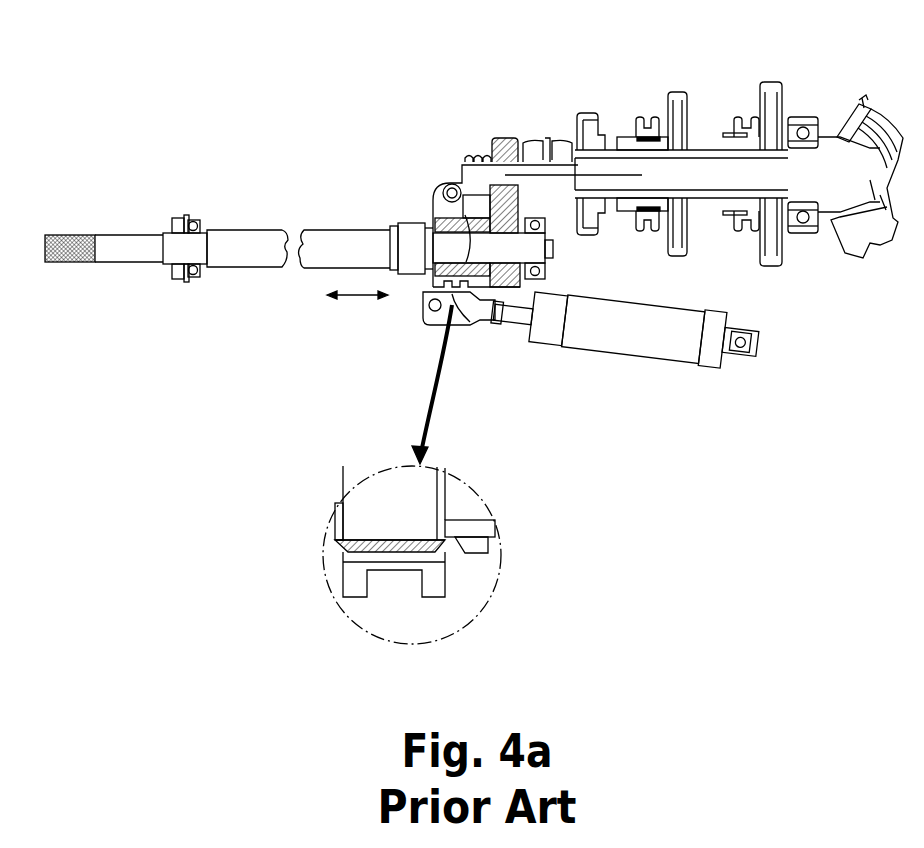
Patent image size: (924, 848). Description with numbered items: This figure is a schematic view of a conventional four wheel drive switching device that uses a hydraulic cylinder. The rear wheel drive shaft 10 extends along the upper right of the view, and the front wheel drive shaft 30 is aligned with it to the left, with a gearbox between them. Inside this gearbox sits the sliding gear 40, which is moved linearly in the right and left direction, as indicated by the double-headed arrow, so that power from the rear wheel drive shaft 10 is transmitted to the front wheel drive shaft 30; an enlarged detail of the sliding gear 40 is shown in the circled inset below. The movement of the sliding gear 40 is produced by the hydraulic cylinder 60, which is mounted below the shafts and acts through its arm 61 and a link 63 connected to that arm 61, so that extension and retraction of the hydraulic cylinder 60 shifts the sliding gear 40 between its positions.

The rear wheel drive shaft 10 is at (714, 168).
The front wheel drive shaft 30 is at (326, 244).
The sliding gear 40 is at (437, 300).
The hydraulic cylinder 60 is at (727, 318).
The arm 61 is at (450, 323).
The link 63 is at (422, 247).